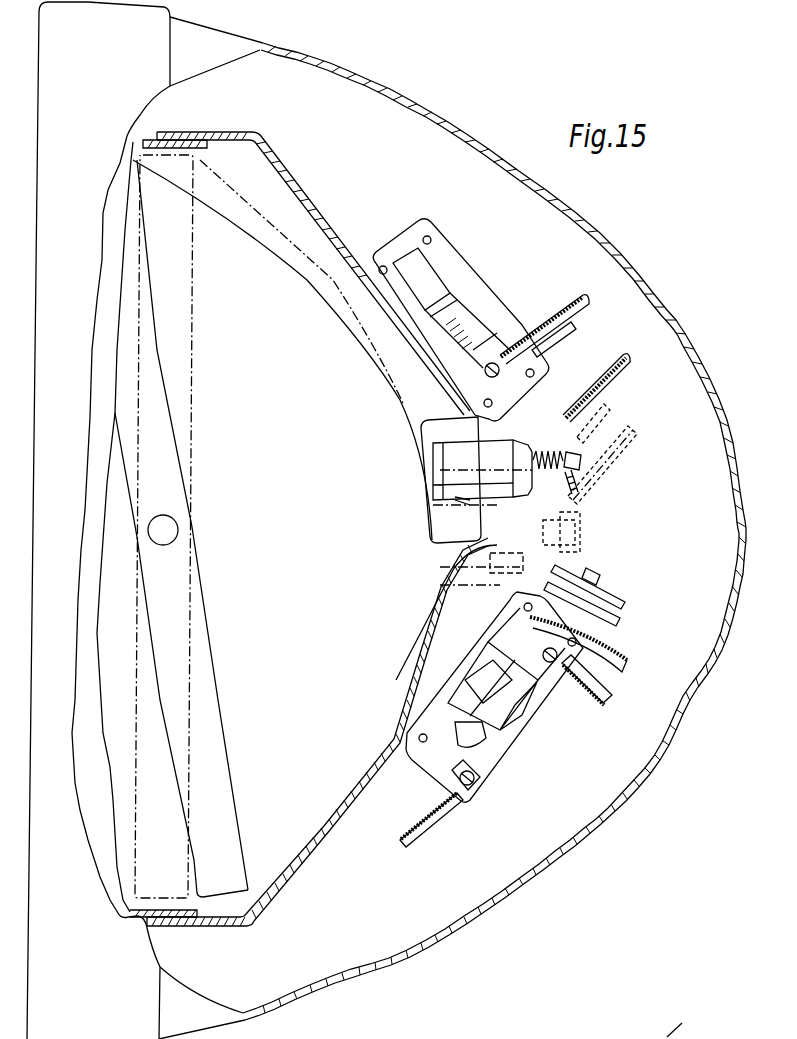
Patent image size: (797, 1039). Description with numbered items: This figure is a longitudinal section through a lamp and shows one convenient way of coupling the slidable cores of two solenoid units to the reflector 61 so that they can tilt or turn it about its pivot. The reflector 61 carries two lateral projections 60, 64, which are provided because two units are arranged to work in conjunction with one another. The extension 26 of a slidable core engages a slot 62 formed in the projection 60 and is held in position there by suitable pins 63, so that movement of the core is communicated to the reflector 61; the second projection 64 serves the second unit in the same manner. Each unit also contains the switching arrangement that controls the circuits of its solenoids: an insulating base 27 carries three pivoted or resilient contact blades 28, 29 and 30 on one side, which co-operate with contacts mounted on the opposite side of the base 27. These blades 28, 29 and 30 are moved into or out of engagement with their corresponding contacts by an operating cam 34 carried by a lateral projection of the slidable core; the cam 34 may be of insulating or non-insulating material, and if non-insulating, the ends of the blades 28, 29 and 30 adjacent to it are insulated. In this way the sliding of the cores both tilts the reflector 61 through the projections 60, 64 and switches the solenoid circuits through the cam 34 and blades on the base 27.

The extension 26 is at (523, 405).
The insulating base 27 is at (487, 278).
The contact blade 28 is at (483, 668).
The contact blade 29 is at (470, 338).
The contact blade 30 is at (517, 704).
The operating cam 34 is at (420, 272).
The lateral projection 60 is at (615, 617).
The reflector 61 is at (405, 632).
The slot 62 is at (622, 598).
The pins 63 is at (606, 588).
The lateral projection 64 is at (573, 328).